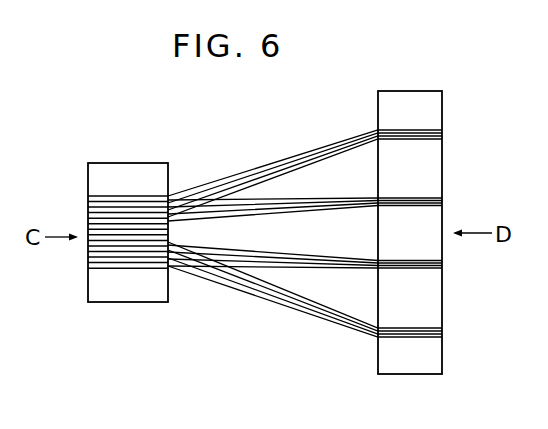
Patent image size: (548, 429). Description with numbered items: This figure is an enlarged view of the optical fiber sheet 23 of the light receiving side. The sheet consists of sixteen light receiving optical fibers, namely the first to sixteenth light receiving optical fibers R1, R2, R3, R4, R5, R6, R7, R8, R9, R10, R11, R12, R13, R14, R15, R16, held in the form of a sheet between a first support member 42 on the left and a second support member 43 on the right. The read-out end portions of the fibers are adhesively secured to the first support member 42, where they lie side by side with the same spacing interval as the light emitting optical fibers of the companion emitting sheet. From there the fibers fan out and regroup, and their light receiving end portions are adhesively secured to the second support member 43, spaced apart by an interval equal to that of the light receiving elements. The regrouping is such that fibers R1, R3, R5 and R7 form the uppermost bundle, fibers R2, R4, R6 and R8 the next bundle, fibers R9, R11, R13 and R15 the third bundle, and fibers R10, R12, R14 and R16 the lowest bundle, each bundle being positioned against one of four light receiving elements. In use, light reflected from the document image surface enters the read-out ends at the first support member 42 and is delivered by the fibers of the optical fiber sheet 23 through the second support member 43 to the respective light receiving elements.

The first support member 42 is at (138, 290).
The second support member 43 is at (428, 358).
The optical fiber sheet of the light receiving side 23 is at (238, 344).
The first light receiving optical fiber R1 is at (340, 140).
The second light receiving optical fiber R2 is at (254, 200).
The third light receiving optical fiber R3 is at (306, 158).
The fourth light receiving optical fiber R4 is at (287, 203).
The fifth light receiving optical fiber R5 is at (280, 165).
The sixth light receiving optical fiber R6 is at (317, 208).
The seventh light receiving optical fiber R7 is at (250, 180).
The eighth light receiving optical fiber R8 is at (340, 205).
The ninth light receiving optical fiber R9 is at (285, 255).
The tenth light receiving optical fiber R10 is at (233, 272).
The eleventh light receiving optical fiber R11 is at (327, 257).
The twelfth light receiving optical fiber R12 is at (247, 288).
The thirteenth light receiving optical fiber R13 is at (363, 281).
The fourteenth light receiving optical fiber R14 is at (278, 302).
The fifteenth light receiving optical fiber R15 is at (367, 270).
The sixteenth light receiving optical fiber R16 is at (312, 317).